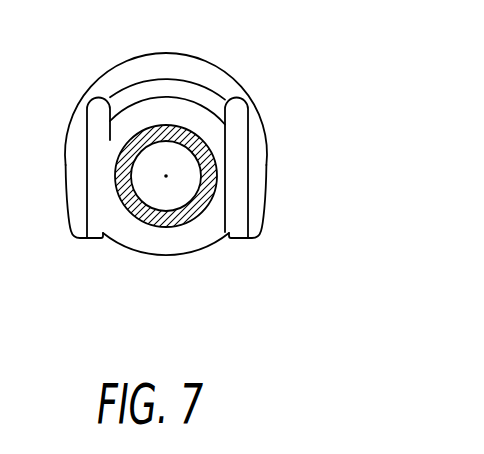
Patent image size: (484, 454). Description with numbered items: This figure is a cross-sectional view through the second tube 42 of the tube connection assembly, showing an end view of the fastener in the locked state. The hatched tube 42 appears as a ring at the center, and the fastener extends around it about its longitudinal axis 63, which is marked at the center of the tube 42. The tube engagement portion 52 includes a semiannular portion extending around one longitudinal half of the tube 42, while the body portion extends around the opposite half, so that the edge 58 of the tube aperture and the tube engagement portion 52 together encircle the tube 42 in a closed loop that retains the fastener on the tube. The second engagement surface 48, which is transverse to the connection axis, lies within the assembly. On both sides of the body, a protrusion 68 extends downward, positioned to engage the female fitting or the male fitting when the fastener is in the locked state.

The second tube 42 is at (178, 123).
The second engagement surface 48 is at (205, 118).
The tube engagement portion 52 is at (178, 238).
The edge of the tube aperture 58 is at (152, 65).
The longitudinal axis 63 is at (166, 176).
The protrusion 68 is at (100, 240).